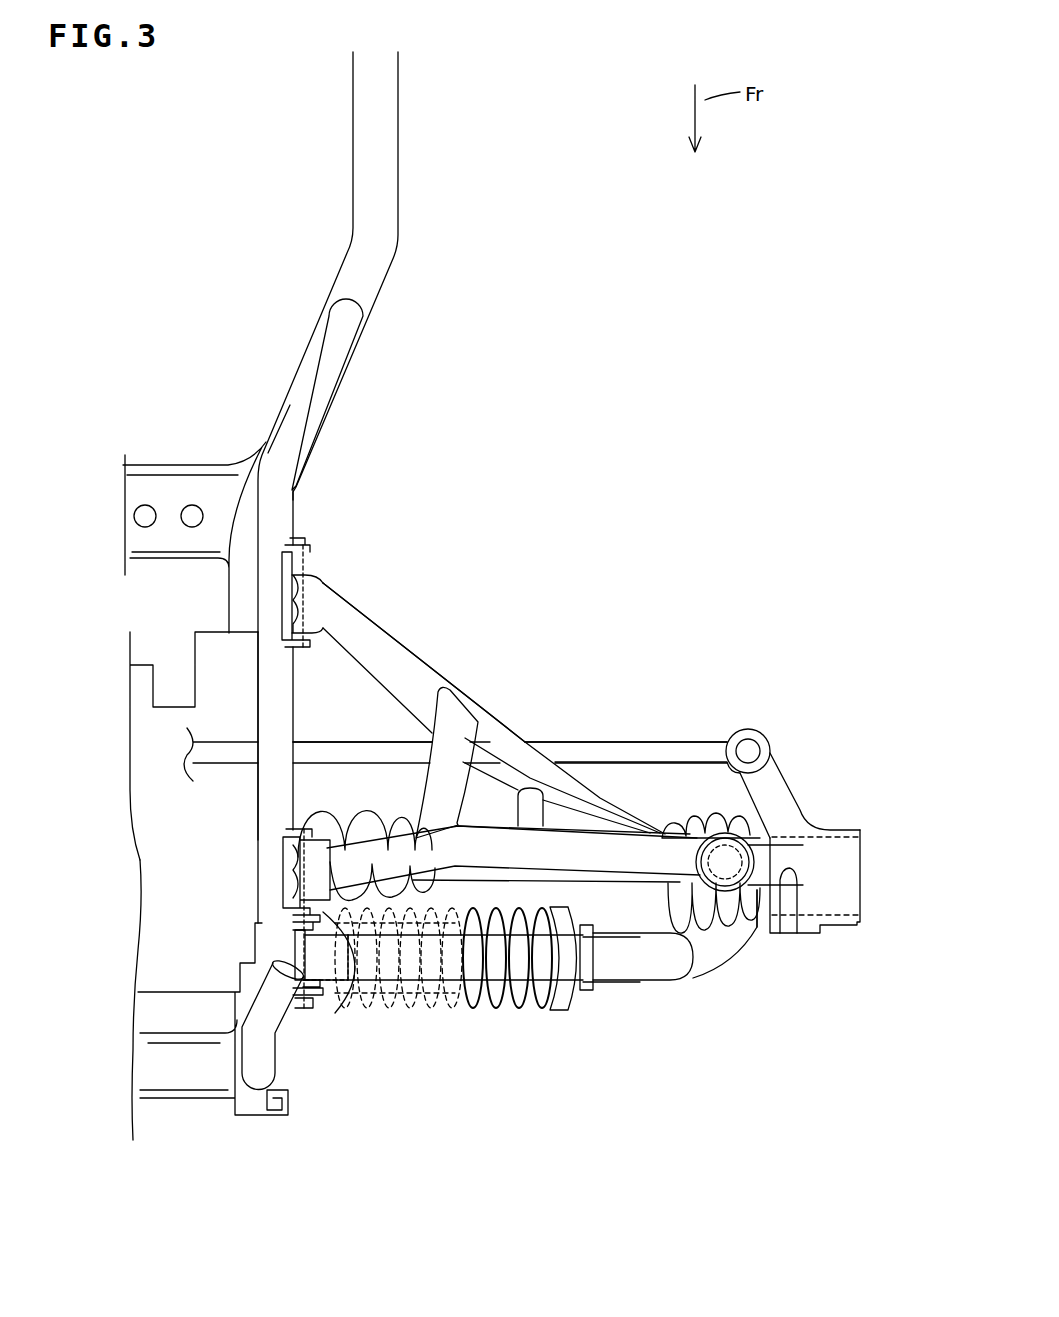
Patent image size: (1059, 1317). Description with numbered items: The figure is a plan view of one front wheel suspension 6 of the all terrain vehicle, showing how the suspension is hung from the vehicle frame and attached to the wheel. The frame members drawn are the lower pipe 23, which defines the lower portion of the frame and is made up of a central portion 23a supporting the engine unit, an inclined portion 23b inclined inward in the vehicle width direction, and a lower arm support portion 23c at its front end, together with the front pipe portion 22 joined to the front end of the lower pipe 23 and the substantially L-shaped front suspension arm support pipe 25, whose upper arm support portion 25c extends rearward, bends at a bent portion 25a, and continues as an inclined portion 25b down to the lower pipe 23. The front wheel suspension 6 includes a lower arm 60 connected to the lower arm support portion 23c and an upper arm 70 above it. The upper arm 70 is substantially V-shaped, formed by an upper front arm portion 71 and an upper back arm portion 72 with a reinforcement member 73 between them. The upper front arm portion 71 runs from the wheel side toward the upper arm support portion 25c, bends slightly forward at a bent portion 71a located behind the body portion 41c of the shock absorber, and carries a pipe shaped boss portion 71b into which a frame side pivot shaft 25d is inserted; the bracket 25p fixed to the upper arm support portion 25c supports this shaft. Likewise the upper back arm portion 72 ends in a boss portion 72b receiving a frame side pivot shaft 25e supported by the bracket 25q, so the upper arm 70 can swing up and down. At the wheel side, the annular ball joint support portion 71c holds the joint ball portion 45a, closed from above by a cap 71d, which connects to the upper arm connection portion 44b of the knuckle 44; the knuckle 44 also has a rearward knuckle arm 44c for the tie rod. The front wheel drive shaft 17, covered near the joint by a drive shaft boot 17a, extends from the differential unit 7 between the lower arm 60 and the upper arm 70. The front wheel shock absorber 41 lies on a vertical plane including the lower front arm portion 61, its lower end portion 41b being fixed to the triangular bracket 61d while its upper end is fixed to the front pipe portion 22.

The front wheel suspension 6 is at (620, 650).
The front wheel differential unit 7 is at (183, 980).
The front wheel drive shaft 17 is at (620, 933).
The drive shaft boot 17a is at (757, 927).
The front pipe portion 22 is at (267, 1063).
The lower pipe 23 is at (338, 117).
The central portion 23a is at (398, 115).
The inclined portion 23b is at (357, 353).
The lower arm support portion 23c is at (237, 620).
The front suspension arm support pipe 25 is at (268, 408).
The bent portion 25a is at (278, 478).
The inclined portion 25b is at (322, 357).
The upper arm support portion 25c is at (283, 705).
The frame side pivot shaft 25d is at (283, 866).
The frame side pivot shaft 25e is at (283, 587).
The bracket 25p is at (280, 897).
The bracket 25q is at (283, 566).
The front wheel shock absorber 41 is at (455, 1012).
The lower end portion 41b is at (597, 963).
The body portion 41c is at (535, 892).
The knuckle 44 is at (842, 944).
The upper arm connection portion 44b is at (790, 935).
The knuckle arm 44c is at (780, 803).
The joint ball portion 45a is at (735, 820).
The front side lower arm 60 is at (707, 998).
The lower front arm portion 61 is at (663, 995).
The bracket 61d is at (590, 963).
The front side upper arm 70 is at (512, 705).
The upper front arm portion 71 is at (540, 870).
The bent portion 71a is at (500, 868).
The boss portion 71b is at (460, 845).
The ball joint support portion 71c is at (723, 827).
The cap 71d is at (687, 823).
The upper back arm portion 72 is at (449, 662).
The boss portion 72b is at (305, 580).
The reinforcement member 73 is at (457, 717).